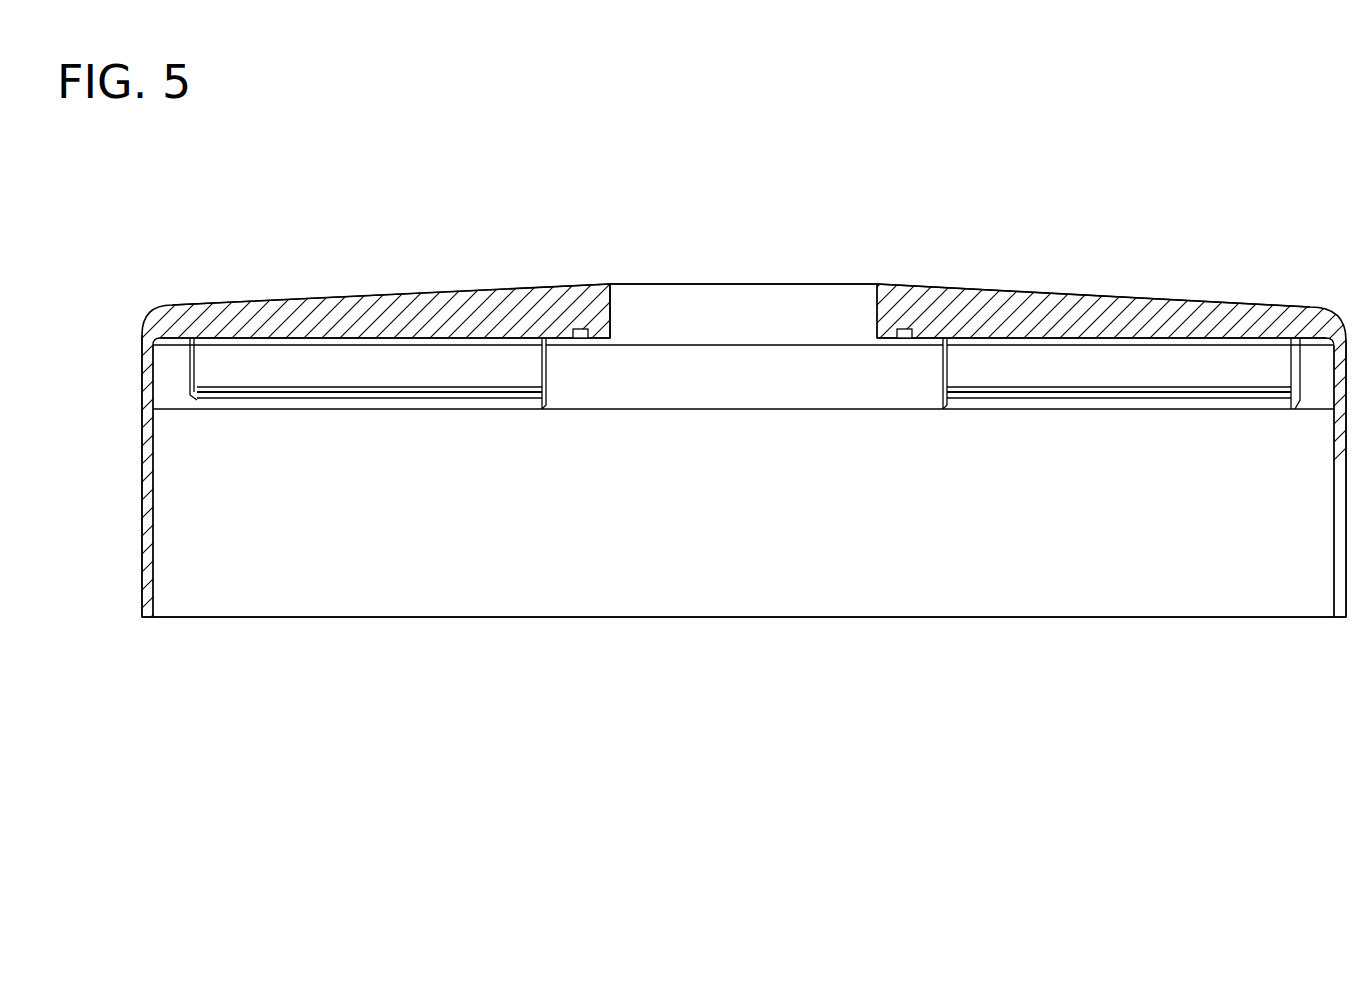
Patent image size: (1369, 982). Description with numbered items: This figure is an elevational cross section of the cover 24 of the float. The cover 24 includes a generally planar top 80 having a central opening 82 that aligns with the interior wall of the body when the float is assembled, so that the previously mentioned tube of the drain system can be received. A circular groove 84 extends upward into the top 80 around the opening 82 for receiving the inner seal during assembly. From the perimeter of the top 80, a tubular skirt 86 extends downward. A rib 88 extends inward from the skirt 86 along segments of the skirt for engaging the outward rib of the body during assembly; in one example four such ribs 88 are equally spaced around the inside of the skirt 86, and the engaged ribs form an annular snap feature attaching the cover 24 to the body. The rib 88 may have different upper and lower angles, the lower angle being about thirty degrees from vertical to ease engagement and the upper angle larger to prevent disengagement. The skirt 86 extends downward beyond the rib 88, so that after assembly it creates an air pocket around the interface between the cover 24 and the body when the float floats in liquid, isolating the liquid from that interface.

The cover 24 is at (684, 350).
The top 80 is at (449, 291).
The central opening 82 is at (612, 310).
The circular groove 84 is at (582, 339).
The tubular skirt 86 is at (1335, 592).
The rib 88 is at (201, 393).